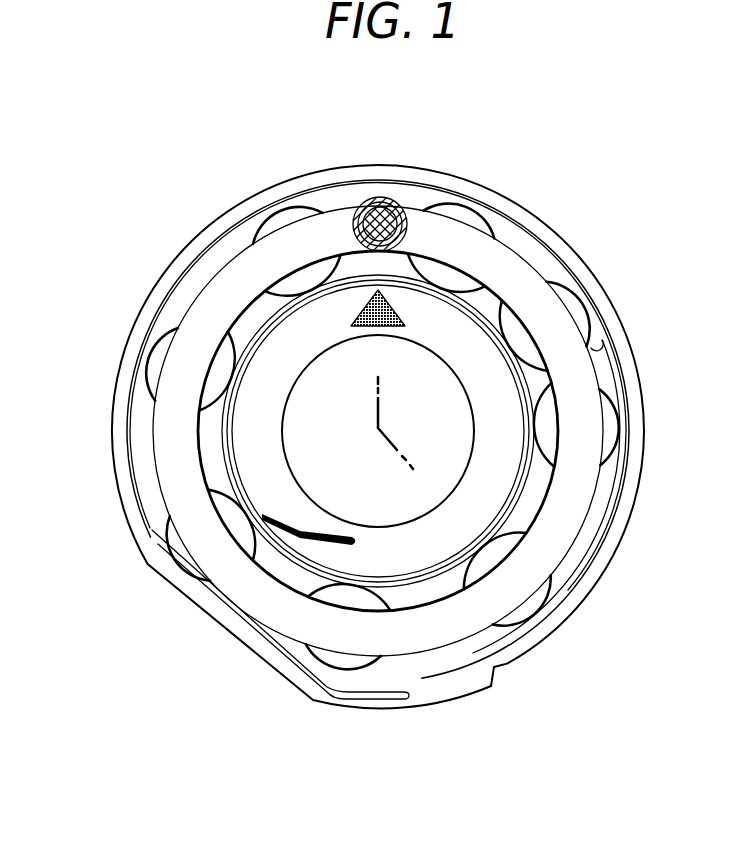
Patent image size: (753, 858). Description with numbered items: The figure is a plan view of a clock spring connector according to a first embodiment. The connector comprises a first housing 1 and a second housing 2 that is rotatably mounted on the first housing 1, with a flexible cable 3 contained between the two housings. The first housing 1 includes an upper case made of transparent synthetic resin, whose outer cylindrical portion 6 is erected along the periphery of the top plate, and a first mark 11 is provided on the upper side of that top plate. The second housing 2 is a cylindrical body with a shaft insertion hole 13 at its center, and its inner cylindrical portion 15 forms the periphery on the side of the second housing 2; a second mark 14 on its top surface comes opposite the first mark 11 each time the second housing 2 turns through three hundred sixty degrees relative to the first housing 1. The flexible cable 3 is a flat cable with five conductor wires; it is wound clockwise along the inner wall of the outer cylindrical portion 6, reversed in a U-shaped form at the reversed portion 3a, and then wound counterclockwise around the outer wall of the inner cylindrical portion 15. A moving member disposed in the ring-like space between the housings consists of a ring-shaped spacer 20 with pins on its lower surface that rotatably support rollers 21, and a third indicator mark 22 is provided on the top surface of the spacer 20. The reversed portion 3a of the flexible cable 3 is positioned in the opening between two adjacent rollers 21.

The first housing 1 is at (118, 357).
The second housing 2 is at (384, 152).
The flexible cable 3 is at (430, 573).
The reversed portion 3a is at (594, 347).
The outer cylindrical portion 6 is at (126, 437).
The first mark 11 is at (417, 193).
The shaft insertion hole 13 is at (284, 432).
The second mark 14 is at (392, 302).
The inner cylindrical portion 15 is at (273, 350).
The ring-shaped spacer 20 is at (237, 587).
The rollers 21 is at (610, 424).
The third indicator mark 22 is at (364, 200).